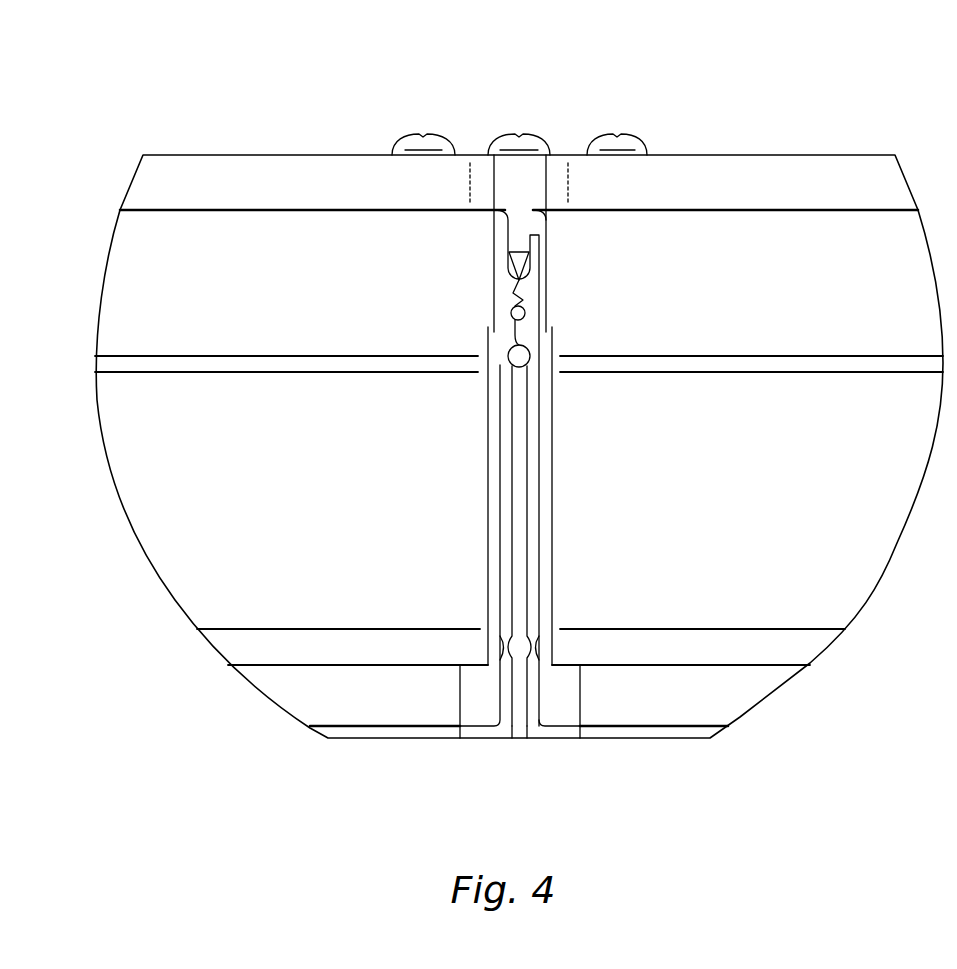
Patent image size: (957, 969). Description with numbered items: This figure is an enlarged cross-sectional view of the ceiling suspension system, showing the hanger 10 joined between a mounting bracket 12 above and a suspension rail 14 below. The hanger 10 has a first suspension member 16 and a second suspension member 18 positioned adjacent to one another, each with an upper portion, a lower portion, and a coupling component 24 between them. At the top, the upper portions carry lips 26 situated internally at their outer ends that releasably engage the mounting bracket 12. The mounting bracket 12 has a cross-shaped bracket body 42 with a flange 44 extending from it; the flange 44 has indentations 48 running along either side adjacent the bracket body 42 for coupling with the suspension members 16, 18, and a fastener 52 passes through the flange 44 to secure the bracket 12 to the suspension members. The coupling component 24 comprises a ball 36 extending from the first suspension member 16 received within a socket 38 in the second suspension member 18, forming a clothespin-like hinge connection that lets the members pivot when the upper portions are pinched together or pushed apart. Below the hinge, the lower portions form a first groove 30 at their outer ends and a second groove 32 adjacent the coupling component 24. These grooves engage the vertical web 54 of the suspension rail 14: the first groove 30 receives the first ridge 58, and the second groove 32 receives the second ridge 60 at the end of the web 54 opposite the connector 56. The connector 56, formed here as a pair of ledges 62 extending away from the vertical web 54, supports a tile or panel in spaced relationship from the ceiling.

The hanger 10 is at (193, 490).
The mounting bracket 12 is at (807, 155).
The suspension rail 14 is at (743, 687).
The first suspension member 16 is at (830, 489).
The second suspension member 18 is at (325, 491).
The coupling component 24 is at (528, 301).
The lip 26 is at (505, 212).
The first groove 30 is at (502, 646).
The second groove 32 is at (500, 366).
The ball 36 is at (510, 314).
The socket 38 is at (528, 320).
The bracket body 42 is at (275, 170).
The flange 44 is at (510, 236).
The indentation 48 is at (533, 213).
The fastener 52 is at (627, 135).
The vertical web 54 is at (520, 558).
The connector 56 is at (556, 738).
The first ridge 58 is at (530, 650).
The second ridge 60 is at (531, 372).
The ledge 62 is at (487, 732).